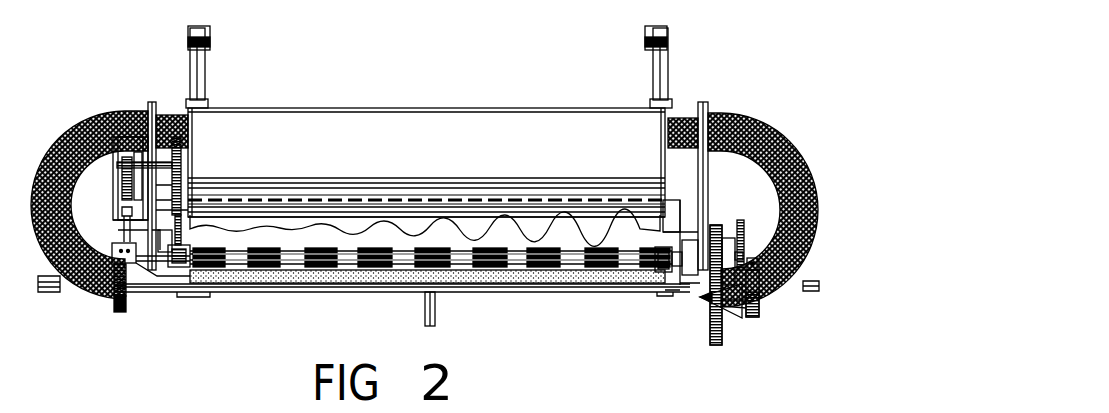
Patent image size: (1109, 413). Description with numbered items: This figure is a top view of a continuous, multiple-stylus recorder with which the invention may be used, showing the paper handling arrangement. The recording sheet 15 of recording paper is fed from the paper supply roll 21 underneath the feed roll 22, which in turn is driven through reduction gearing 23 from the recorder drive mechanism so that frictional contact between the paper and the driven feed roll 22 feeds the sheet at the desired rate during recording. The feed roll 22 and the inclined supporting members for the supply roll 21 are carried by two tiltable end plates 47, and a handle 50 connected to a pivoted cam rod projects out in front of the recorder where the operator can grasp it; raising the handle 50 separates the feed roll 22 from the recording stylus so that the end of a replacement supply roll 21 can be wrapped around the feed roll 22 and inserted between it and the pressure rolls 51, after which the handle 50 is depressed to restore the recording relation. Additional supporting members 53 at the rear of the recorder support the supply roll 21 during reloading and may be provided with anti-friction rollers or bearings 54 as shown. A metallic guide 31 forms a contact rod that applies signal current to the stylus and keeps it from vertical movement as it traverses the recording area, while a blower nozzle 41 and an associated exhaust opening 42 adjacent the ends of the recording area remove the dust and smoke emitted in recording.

The recording sheet 15 is at (417, 242).
The paper supply roll 21 is at (392, 112).
The feed roll 22 is at (666, 222).
The reduction gearing 23 is at (128, 201).
The metallic guide 31 is at (497, 284).
The blower nozzle 41 is at (724, 312).
The exhaust opening 42 is at (127, 303).
The tiltable end plates 47 is at (149, 103).
The handle 50 is at (440, 316).
The pressure rolls 51 is at (656, 265).
The supporting members 53 is at (203, 78).
The anti-friction rollers or bearings 54 is at (210, 42).